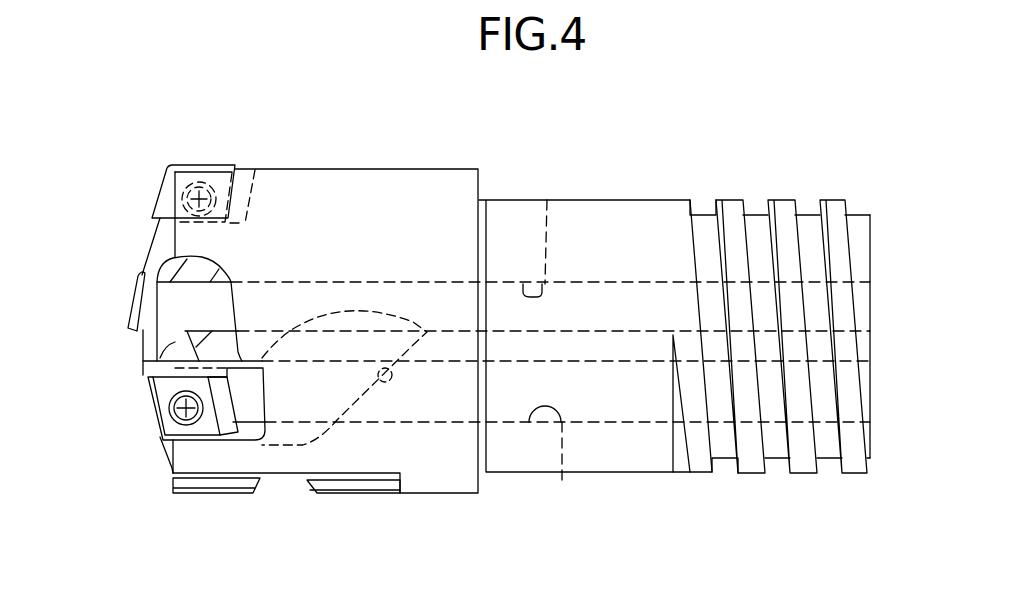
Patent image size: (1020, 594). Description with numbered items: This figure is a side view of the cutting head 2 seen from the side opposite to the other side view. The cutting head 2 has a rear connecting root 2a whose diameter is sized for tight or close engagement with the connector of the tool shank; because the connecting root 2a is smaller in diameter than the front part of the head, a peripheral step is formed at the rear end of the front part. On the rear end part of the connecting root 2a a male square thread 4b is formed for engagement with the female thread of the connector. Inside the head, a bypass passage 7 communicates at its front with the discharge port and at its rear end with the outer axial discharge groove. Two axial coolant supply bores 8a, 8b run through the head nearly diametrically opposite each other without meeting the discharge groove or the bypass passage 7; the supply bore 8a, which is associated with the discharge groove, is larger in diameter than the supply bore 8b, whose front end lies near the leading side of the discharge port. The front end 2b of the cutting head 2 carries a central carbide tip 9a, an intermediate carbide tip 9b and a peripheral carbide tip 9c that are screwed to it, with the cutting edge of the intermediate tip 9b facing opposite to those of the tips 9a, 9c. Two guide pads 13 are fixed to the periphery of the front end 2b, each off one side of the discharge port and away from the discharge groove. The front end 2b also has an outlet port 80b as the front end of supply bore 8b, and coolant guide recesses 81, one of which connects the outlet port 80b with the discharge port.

The cutting head 2 is at (440, 168).
The connecting root 2a is at (618, 220).
The front end 2b is at (155, 240).
The male square thread 4b is at (752, 232).
The bypass passage 7 is at (390, 382).
The coolant supply bore 8a is at (557, 464).
The coolant supply bore 8b is at (549, 180).
The central carbide tip 9a is at (132, 297).
The intermediate carbide tip 9b is at (150, 413).
The peripheral carbide tip 9c is at (192, 168).
The guide pad 13 is at (213, 495).
The outlet port 80b is at (183, 307).
The coolant guide recess 81 is at (140, 385).